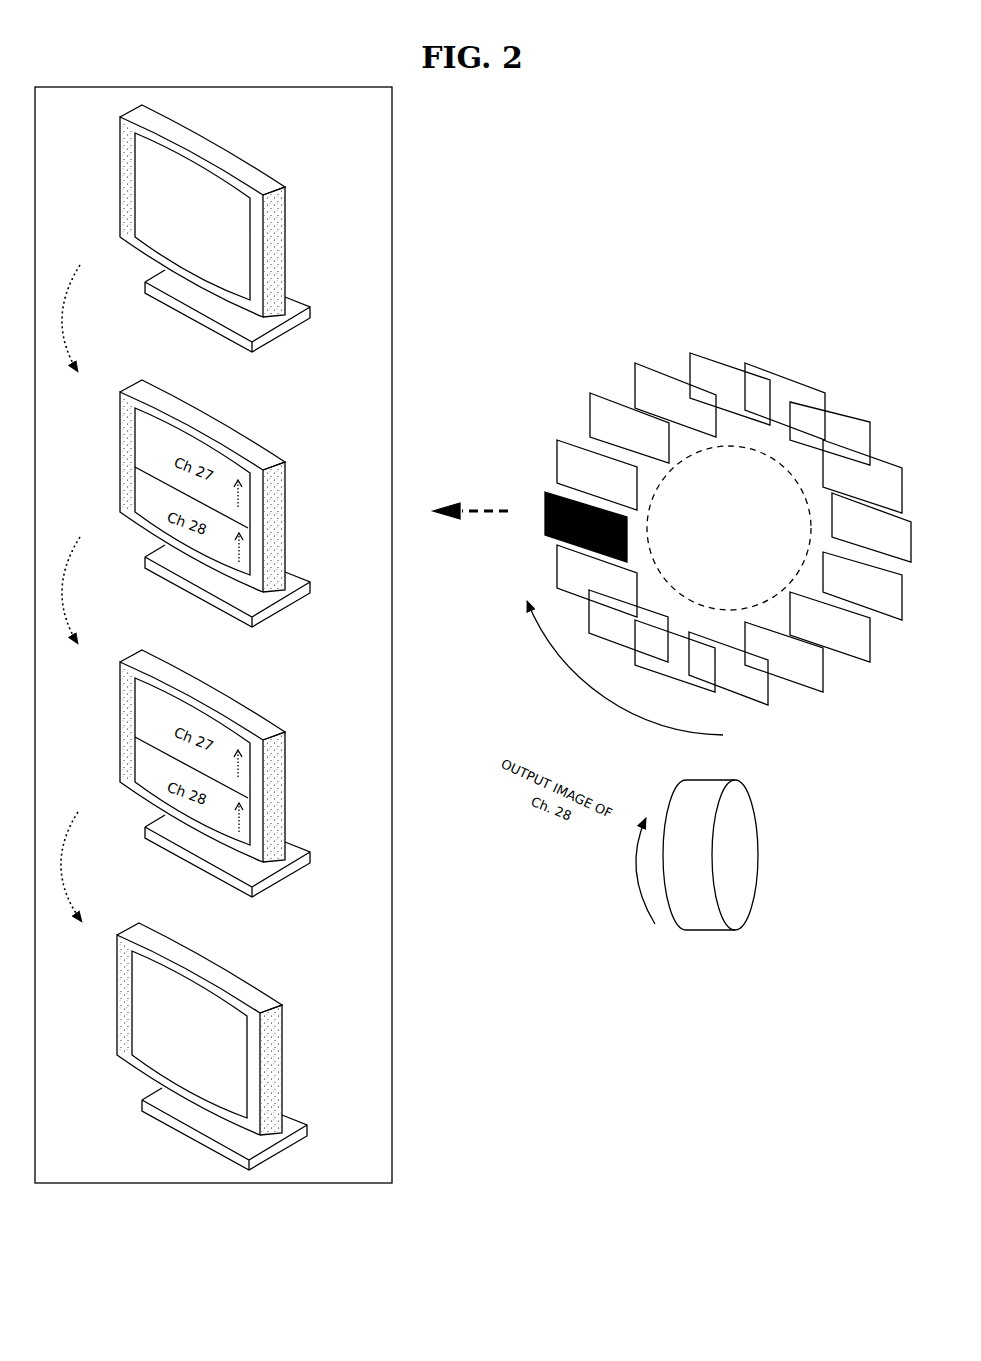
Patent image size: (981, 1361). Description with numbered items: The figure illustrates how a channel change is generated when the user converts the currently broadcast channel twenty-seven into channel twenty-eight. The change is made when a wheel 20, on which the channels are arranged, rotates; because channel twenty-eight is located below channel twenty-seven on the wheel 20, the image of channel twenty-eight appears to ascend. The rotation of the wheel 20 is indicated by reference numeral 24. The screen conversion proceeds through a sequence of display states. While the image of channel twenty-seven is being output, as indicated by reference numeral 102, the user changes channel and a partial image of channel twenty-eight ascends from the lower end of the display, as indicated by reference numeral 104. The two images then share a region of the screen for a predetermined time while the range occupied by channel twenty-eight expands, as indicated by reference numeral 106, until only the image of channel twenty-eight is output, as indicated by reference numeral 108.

The wheel 20 is at (747, 326).
The rotation of the wheel 24 is at (759, 818).
The screen showing image of Ch. 27 being output 102 is at (249, 153).
The screen showing partial image of Ch. 28 ascending 104 is at (249, 425).
The screen showing expanding range of Ch. 28 image 106 is at (249, 692).
The screen showing only image of Ch. 28 output 108 is at (246, 967).